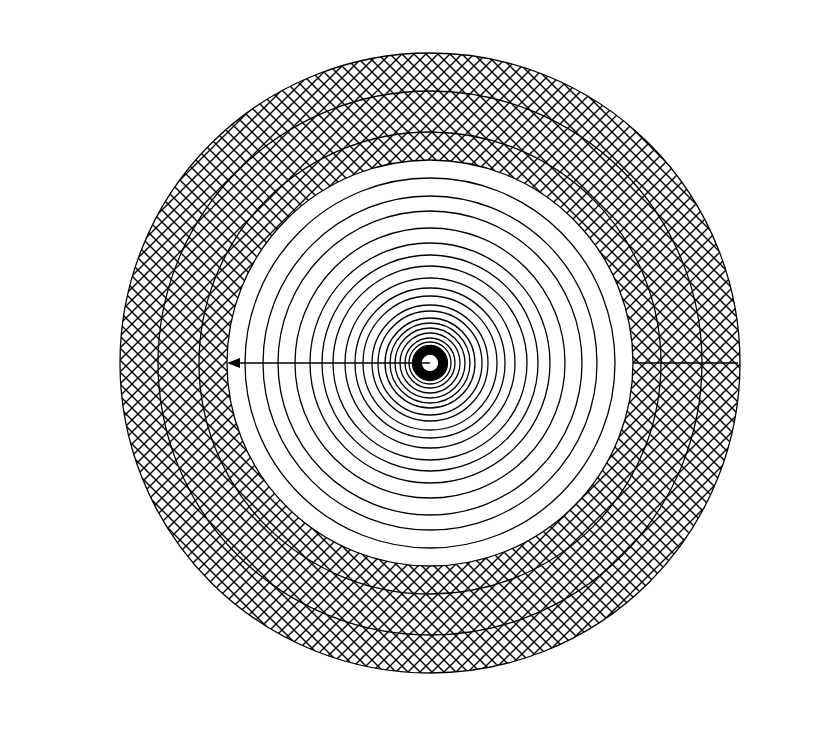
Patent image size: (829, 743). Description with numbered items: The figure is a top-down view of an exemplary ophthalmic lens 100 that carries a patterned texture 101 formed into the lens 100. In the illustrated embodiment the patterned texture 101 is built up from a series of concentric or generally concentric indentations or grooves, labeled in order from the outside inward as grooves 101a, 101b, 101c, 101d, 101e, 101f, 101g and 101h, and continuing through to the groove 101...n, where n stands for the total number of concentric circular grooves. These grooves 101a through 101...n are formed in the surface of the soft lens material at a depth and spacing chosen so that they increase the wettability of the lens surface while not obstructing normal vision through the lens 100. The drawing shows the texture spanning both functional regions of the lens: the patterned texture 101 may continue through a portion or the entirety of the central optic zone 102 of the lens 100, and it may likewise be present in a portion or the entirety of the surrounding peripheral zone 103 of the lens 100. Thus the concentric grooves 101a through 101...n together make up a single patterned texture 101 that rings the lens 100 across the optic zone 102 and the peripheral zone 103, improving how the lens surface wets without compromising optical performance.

The ophthalmic lens 100 is at (373, 50).
The patterned texture 101 is at (627, 183).
The concentric groove 101a is at (333, 87).
The concentric groove 101b is at (290, 140).
The concentric groove 101c is at (273, 197).
The concentric groove 101d is at (273, 233).
The nth concentric groove 101...n is at (407, 352).
The concentric groove 101e is at (260, 303).
The concentric groove 101f is at (270, 327).
The concentric groove 101g is at (287, 348).
The concentric groove 101h is at (262, 398).
The optic zone 102 is at (268, 365).
The peripheral zone 103 is at (688, 370).